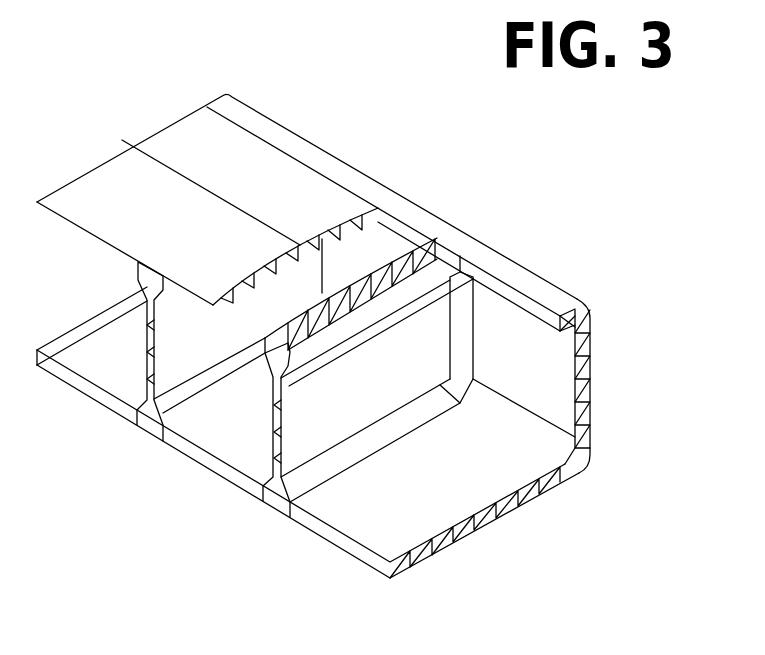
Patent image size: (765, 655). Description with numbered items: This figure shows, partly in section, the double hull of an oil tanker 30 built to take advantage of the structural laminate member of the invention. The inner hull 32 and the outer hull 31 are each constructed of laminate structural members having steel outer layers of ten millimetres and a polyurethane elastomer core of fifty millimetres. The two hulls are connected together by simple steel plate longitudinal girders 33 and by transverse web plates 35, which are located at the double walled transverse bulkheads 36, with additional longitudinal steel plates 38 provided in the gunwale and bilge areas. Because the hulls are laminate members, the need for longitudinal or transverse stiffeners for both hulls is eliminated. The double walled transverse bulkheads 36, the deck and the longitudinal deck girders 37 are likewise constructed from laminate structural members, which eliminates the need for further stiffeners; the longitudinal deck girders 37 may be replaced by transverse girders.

The oil tanker 30 is at (163, 117).
The outer hull 31 is at (450, 552).
The inner hull 32 is at (367, 520).
The longitudinal girders 33 is at (518, 502).
The transverse web plates 35 is at (260, 498).
The double walled transverse bulkheads 36 is at (410, 358).
The longitudinal deck girders 37 is at (340, 227).
The longitudinal steel plates 38 is at (580, 322).